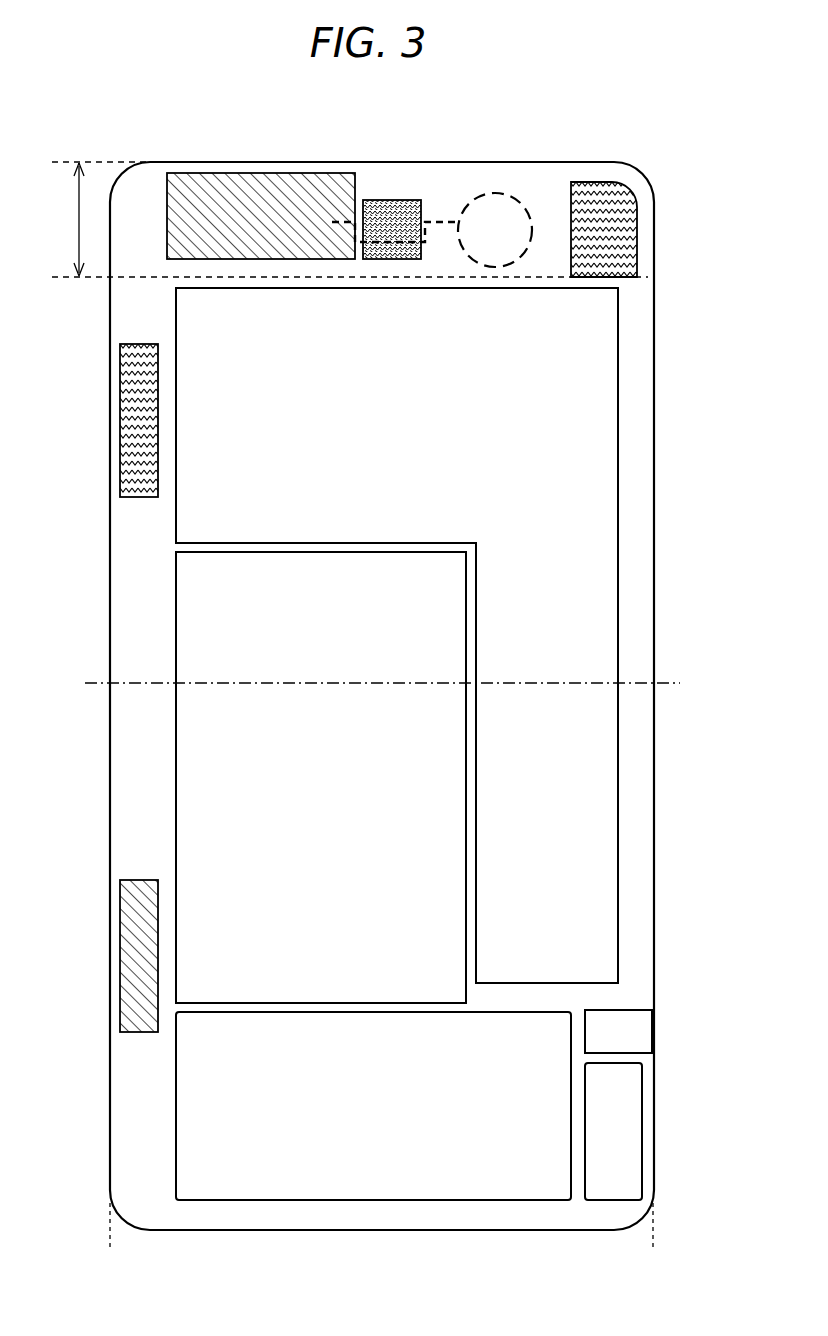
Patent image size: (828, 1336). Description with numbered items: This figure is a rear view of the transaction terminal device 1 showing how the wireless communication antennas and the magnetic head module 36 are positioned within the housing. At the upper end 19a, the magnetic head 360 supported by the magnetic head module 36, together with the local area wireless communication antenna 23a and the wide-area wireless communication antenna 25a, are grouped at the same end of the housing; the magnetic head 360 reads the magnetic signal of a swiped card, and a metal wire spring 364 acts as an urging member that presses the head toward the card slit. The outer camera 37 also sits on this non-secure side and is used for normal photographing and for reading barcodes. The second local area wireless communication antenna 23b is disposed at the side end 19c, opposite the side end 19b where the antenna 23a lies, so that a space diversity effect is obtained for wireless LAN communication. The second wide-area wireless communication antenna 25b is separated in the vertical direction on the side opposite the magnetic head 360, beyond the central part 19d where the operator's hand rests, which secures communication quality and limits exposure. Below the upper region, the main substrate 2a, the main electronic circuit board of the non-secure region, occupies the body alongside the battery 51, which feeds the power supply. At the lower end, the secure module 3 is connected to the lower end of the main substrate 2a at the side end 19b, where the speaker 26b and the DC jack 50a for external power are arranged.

The transaction terminal device 1 is at (311, 144).
The main substrate 2a is at (600, 410).
The secure module 3 is at (207, 1097).
The upper end 19a is at (342, 219).
The side end 19b is at (652, 1241).
The side end 19c is at (113, 1241).
The central part 19d is at (363, 683).
The local area wireless communication antenna 23a is at (602, 210).
The local area wireless communication antenna 23b is at (128, 434).
The wide-area wireless communication antenna 25a is at (193, 180).
The wide-area wireless communication antenna 25b is at (121, 980).
The speaker 26b is at (625, 1107).
The magnetic head module 36 is at (647, 233).
The outer camera 37 is at (495, 210).
The DC jack 50a is at (618, 1030).
The battery 51 is at (224, 740).
The magnetic head 360 is at (380, 207).
The metal wire spring 364 is at (435, 220).